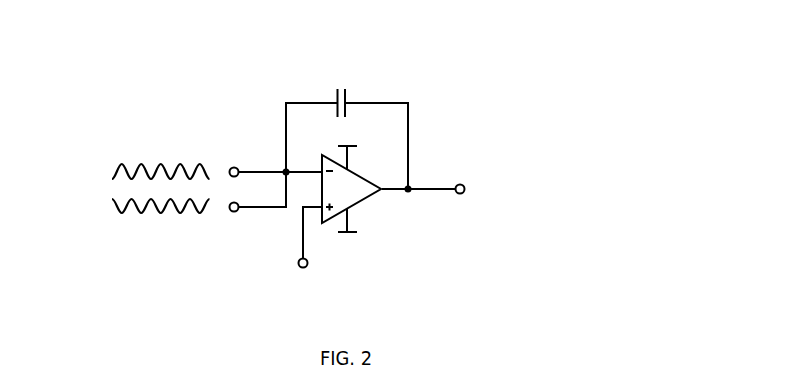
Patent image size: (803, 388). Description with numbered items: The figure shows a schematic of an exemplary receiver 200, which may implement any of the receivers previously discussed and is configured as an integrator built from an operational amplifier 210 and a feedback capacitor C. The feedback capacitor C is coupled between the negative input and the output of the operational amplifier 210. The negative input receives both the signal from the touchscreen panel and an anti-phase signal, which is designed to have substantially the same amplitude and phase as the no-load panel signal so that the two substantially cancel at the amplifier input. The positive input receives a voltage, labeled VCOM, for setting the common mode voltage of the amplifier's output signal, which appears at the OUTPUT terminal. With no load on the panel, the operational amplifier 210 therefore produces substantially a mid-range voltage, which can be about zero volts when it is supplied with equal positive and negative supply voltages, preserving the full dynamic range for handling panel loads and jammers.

The receiver 200 is at (475, 63).
The operational amplifier 210 is at (361, 197).
The feedback capacitor C is at (342, 92).
The common voltage input VCOM is at (304, 252).
The output terminal OUTPUT is at (470, 189).